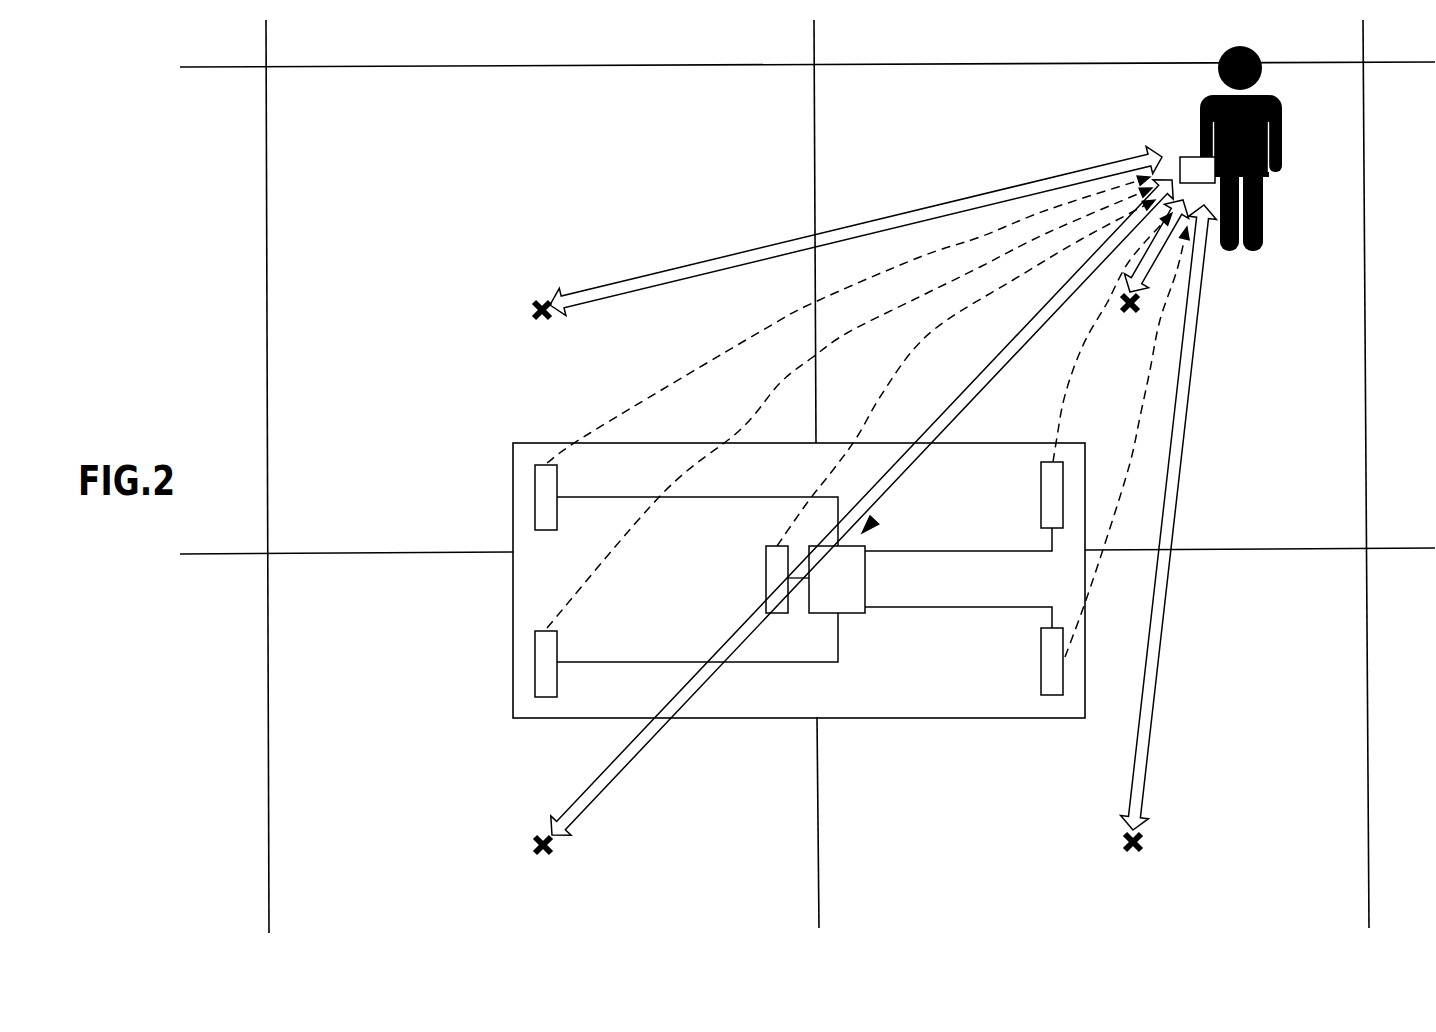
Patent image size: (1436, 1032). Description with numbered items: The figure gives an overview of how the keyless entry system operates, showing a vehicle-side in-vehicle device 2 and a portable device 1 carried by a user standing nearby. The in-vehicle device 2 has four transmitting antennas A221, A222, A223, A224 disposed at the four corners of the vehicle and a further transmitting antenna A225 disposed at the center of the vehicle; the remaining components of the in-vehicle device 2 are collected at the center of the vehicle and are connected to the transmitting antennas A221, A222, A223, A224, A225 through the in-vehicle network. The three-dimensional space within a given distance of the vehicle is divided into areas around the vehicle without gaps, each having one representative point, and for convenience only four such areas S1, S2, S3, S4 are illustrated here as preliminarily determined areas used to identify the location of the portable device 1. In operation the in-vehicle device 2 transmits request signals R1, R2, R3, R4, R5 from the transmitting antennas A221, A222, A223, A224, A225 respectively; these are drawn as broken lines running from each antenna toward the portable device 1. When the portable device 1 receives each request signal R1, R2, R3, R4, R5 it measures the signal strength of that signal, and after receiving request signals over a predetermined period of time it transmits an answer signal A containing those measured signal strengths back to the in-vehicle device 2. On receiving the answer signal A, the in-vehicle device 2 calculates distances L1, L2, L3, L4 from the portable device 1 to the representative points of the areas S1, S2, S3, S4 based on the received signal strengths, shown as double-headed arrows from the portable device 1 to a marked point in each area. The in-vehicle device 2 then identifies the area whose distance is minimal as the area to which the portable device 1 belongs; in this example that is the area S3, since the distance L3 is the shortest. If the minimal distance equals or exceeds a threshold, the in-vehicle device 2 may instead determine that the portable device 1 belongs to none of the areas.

The portable device 1 is at (1180, 158).
The in-vehicle device 2 is at (856, 614).
The answer signal A is at (897, 492).
The transmitting antenna A221 is at (535, 485).
The transmitting antenna A222 is at (535, 664).
The transmitting antenna A223 is at (1041, 470).
The transmitting antenna A224 is at (1041, 659).
The transmitting antenna A225 is at (780, 614).
The distance L1 is at (907, 213).
The distance L2 is at (627, 760).
The distance L3 is at (1137, 312).
The distance L4 is at (1183, 518).
The request signal R1 is at (797, 308).
The request signal R2 is at (797, 386).
The request signal R3 is at (1057, 425).
The request signal R4 is at (1140, 431).
The request signal R5 is at (907, 378).
The area S1 is at (303, 101).
The area S2 is at (304, 590).
The area S3 is at (1358, 99).
The area S4 is at (1361, 589).